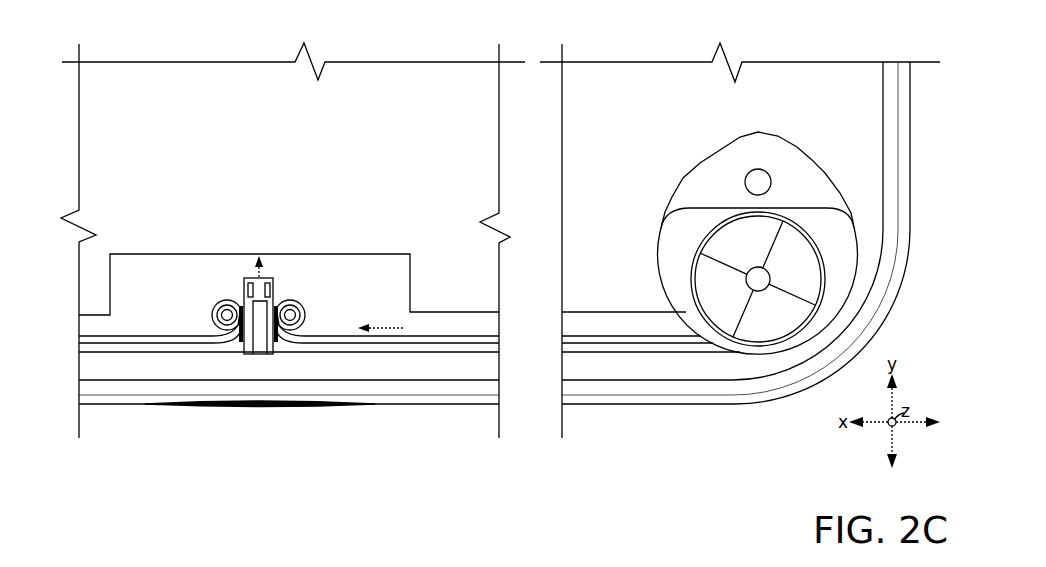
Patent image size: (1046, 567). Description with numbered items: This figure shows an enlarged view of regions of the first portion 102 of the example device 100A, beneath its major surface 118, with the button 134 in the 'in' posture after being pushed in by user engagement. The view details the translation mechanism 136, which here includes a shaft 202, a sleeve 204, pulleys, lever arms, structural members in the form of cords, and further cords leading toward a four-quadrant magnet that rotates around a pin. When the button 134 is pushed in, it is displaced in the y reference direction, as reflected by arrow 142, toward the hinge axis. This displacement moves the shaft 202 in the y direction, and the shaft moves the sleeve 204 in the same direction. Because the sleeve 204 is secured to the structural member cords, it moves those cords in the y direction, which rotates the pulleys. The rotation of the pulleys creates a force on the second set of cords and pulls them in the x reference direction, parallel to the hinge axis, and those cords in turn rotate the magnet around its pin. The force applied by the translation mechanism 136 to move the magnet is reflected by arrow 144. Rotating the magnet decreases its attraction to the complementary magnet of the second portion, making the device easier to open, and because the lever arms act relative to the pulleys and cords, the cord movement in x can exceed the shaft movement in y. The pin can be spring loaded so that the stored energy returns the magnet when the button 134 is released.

The device 100A is at (450, 38).
The major surface 118 is at (220, 116).
The translation mechanism 136 is at (230, 270).
The sleeve 204 is at (251, 294).
The shaft 202 is at (258, 346).
The arrow 142 is at (277, 264).
The arrow 144 is at (380, 316).
The button 134 is at (283, 407).
The first portion 102 is at (652, 46).